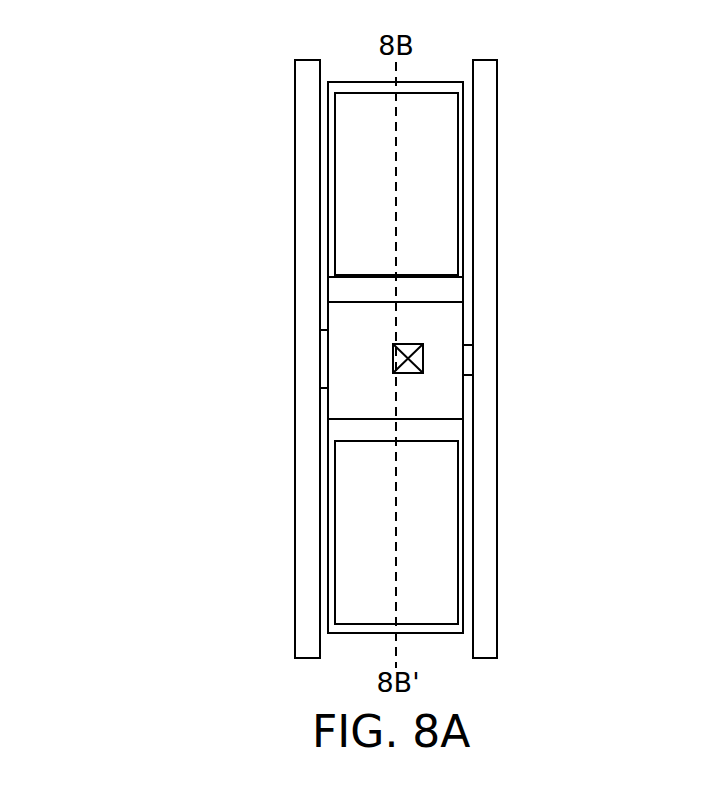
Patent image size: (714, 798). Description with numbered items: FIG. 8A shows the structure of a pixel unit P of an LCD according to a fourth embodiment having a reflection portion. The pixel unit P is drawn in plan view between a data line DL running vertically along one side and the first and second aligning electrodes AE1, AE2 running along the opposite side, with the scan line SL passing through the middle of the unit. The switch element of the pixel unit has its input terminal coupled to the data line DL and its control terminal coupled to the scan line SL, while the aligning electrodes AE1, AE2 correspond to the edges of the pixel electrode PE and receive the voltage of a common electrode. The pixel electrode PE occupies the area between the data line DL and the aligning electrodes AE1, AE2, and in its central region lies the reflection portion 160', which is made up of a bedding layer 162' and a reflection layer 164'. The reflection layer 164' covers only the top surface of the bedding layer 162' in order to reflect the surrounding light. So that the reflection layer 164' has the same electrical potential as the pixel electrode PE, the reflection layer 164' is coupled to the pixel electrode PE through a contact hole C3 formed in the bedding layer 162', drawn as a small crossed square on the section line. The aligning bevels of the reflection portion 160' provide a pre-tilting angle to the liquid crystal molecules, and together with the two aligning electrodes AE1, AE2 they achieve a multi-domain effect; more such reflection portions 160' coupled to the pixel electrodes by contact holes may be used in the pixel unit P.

The pixel unit P is at (226, 39).
The data line DL is at (300, 88).
The first aligning electrode AE1 is at (465, 158).
The second aligning electrode AE2 is at (465, 560).
The pixel electrode PE is at (352, 523).
The reflection portion 160' is at (283, 345).
The bedding layer 162' is at (321, 288).
The reflection layer 164' is at (321, 360).
The scan line SL is at (468, 363).
The contact hole C3 is at (424, 378).